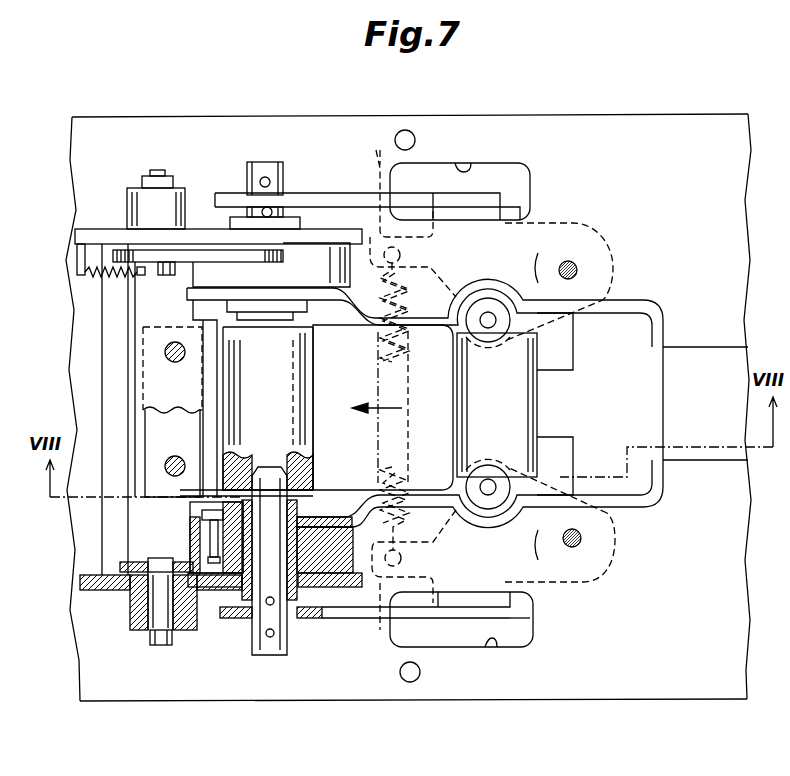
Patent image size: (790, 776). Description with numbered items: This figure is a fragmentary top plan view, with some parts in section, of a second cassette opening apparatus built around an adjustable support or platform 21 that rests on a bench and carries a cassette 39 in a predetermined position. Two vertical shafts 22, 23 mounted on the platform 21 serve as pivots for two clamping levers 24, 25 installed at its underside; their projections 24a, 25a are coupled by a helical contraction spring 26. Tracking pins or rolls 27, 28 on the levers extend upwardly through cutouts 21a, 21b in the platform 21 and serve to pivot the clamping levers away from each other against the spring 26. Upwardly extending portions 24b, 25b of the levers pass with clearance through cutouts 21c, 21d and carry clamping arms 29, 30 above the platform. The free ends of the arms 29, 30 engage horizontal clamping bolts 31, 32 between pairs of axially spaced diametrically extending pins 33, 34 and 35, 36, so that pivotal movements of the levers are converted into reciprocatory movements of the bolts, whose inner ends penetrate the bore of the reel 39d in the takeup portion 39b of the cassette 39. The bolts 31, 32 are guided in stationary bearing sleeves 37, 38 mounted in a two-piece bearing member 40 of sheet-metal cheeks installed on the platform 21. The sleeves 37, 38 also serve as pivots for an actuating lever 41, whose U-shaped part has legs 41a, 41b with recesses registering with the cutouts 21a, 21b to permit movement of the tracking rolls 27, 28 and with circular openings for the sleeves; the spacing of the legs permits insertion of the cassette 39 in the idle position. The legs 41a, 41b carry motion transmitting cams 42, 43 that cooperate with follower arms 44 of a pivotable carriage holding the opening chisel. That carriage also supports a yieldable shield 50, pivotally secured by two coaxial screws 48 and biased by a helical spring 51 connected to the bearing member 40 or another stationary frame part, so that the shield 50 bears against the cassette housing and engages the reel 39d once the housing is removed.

The adjustable support or platform 21 is at (711, 113).
The aperture or cutout 21a is at (570, 366).
The aperture or cutout 21b is at (572, 465).
The aperture or cutout 21c is at (468, 164).
The aperture or cutout 21d is at (494, 648).
The vertical shaft 22 is at (576, 275).
The vertical shaft 23 is at (579, 545).
The clamping lever 24 is at (574, 224).
The projection 24a is at (372, 147).
The upwardly extending portion 24b is at (505, 211).
The clamping lever 25 is at (584, 583).
The projection 25a is at (368, 619).
The upwardly extending portion 25b is at (538, 630).
The helical contraction spring 26 is at (407, 347).
The tracking pin or roll 27 is at (488, 312).
The tracking pin or roll 28 is at (486, 518).
The clamping arm 29 is at (343, 197).
The clamping arm 30 is at (337, 619).
The horizontal clamping bolt 31 is at (257, 165).
The horizontal clamping bolt 32 is at (281, 651).
The diametrically extending pin 33 is at (269, 179).
The diametrically extending pin 34 is at (271, 209).
The diametrically extending pin 35 is at (275, 601).
The diametrically extending pin 36 is at (266, 636).
The stationary bearing sleeve 37 is at (302, 300).
The stationary bearing sleeve 38 is at (306, 504).
The cassette 39 is at (521, 413).
The takeup portion 39b is at (282, 372).
The reel 39d is at (268, 453).
The two-piece bearing member 40 is at (84, 232).
The actuating lever 41 is at (697, 453).
The leg 41a is at (643, 308).
The leg 41b is at (647, 503).
The motion transmitting cam 42 is at (227, 370).
The motion transmitting cam 43 is at (200, 553).
The follower arm 44 is at (220, 255).
The coaxial screw 48 is at (165, 275).
The yieldable shield 50 is at (140, 393).
The helical spring 51 is at (110, 274).